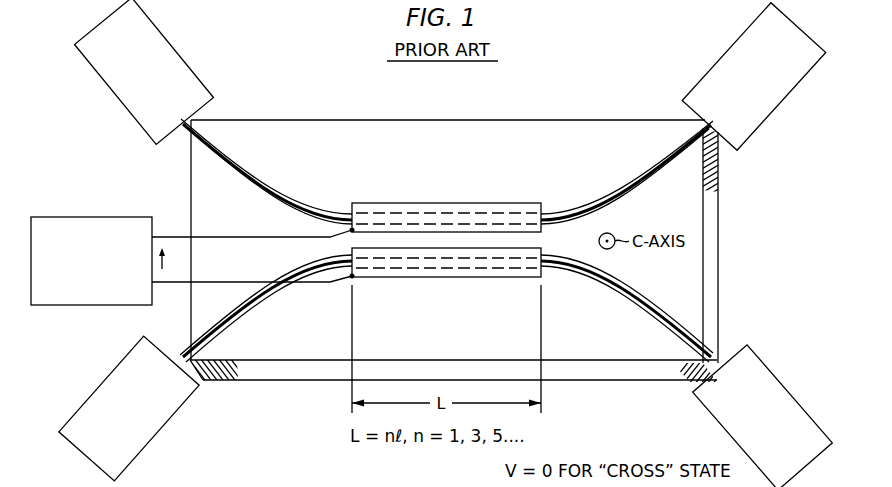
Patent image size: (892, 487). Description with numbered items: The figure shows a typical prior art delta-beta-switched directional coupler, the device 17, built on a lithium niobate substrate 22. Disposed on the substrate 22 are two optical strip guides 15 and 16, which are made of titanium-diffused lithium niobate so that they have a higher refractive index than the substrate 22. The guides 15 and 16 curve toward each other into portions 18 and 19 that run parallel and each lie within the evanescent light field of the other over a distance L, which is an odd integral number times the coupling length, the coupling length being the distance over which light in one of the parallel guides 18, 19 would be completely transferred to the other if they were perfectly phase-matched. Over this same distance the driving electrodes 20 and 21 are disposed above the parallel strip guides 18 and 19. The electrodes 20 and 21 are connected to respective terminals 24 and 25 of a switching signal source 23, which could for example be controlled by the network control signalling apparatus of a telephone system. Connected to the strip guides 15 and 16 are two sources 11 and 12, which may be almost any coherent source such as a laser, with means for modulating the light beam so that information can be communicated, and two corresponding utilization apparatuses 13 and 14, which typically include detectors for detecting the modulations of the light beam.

The source 11 is at (112, 92).
The source 12 is at (100, 385).
The utilization apparatus 13 is at (779, 108).
The utilization apparatus 14 is at (784, 386).
The optical strip guide 15 is at (268, 186).
The optical strip guide 16 is at (244, 306).
The device 17 is at (457, 152).
The parallel strip guide portion 18 is at (408, 218).
The parallel strip guide portion 19 is at (405, 262).
The driving electrode 20 is at (498, 203).
The driving electrode 21 is at (497, 277).
The lithium niobate substrate 22 is at (268, 380).
The switching signal source 23 is at (91, 217).
The terminal 24 is at (231, 237).
The terminal 25 is at (233, 282).